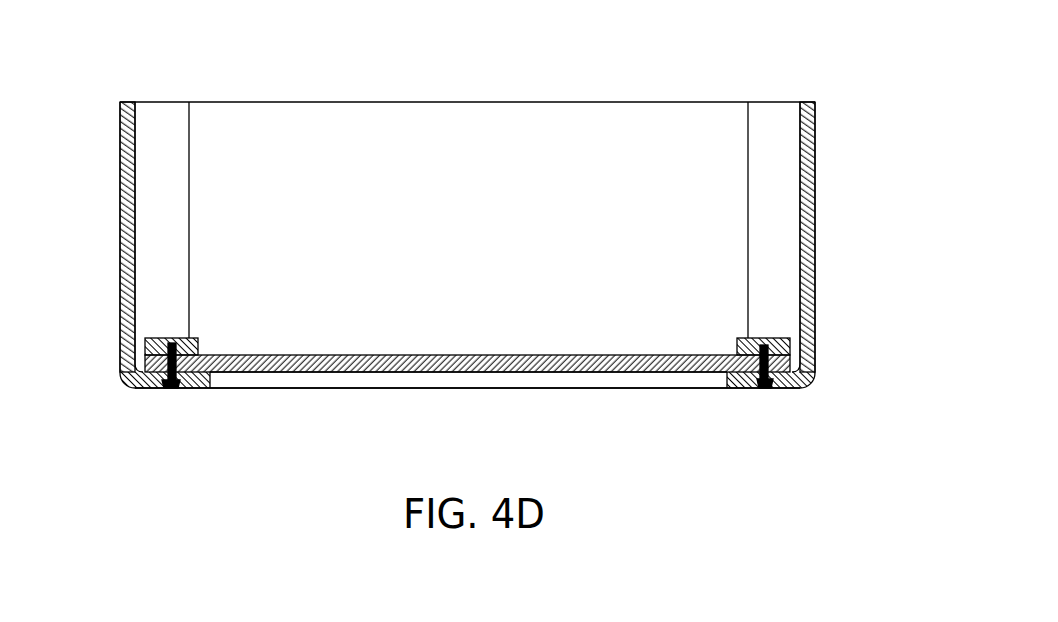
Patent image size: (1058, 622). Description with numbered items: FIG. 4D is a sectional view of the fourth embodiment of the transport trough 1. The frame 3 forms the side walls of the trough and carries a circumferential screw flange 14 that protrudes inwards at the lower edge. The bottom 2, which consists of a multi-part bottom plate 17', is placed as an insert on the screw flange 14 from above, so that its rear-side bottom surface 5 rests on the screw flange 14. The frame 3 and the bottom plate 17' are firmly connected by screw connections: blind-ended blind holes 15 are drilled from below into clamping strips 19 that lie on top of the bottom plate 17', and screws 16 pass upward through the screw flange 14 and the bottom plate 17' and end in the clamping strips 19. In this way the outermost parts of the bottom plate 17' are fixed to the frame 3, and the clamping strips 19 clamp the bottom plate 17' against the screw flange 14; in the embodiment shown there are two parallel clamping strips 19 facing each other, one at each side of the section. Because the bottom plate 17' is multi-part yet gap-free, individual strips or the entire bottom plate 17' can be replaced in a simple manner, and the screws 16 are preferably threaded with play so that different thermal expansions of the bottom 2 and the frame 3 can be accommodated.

The transport trough 1 is at (732, 99).
The bottom 2 is at (368, 391).
The frame 3 is at (128, 258).
The rear-side bottom surface 5 is at (270, 373).
The screw flange 14 is at (160, 378).
The blind hole 15 is at (170, 352).
The screw 16 is at (765, 388).
The bottom plate 17' is at (467, 413).
The clamping strip 19 is at (150, 342).